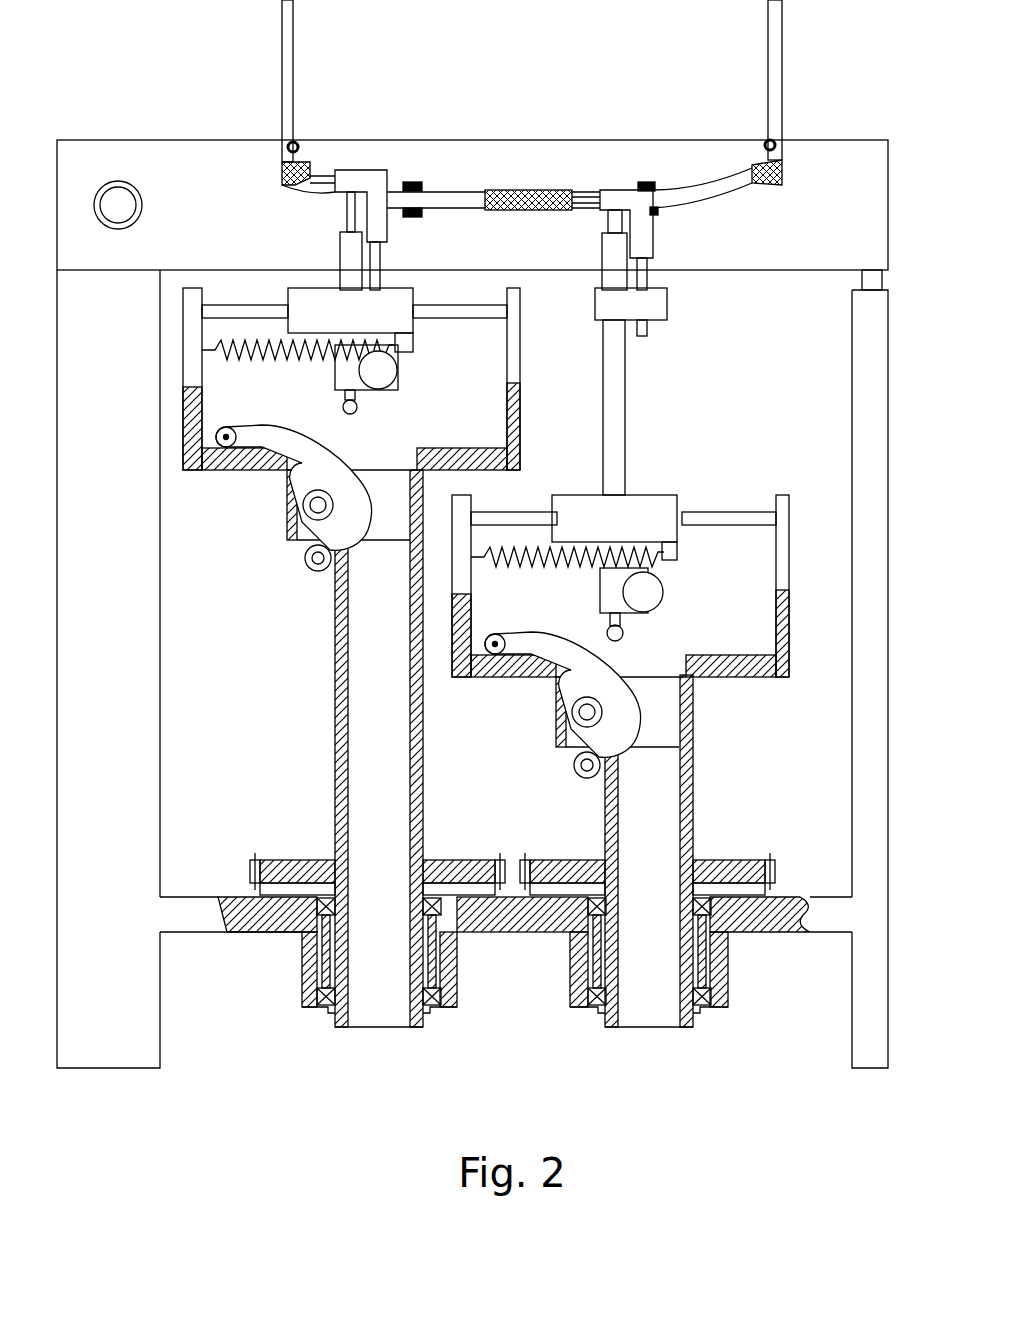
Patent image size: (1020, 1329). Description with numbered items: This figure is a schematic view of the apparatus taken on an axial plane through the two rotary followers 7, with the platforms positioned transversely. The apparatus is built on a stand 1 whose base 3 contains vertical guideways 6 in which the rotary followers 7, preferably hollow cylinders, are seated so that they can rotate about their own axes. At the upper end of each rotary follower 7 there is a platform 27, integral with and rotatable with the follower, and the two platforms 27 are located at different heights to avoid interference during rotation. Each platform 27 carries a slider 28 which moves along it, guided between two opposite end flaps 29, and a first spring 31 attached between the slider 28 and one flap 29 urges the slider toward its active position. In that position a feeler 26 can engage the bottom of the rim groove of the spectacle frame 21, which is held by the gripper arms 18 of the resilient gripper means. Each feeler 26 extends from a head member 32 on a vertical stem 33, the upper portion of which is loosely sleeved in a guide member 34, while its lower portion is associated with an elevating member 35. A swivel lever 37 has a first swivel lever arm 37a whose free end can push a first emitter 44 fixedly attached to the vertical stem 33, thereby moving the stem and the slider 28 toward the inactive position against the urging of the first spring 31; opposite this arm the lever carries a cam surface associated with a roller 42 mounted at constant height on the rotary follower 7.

The stand 1 is at (878, 985).
The base 3 is at (180, 912).
The vertical guideways 6 is at (305, 955).
The rotary followers 7 is at (337, 705).
The gripper arms 18 is at (420, 180).
The spectacle frame 21 is at (283, 75).
The feeler 26 is at (320, 180).
The platform 27 is at (210, 470).
The slider 28 is at (410, 330).
The end flaps 29 is at (192, 372).
The first spring 31 is at (215, 345).
The head member 32 is at (365, 175).
The vertical stem 33 is at (355, 400).
The guide member 34 is at (343, 262).
The elevating member 35 is at (395, 460).
The swivel lever 37 is at (300, 525).
The first swivel lever arm 37a is at (263, 442).
The roller 42 is at (318, 575).
The first emitter 44 is at (337, 373).